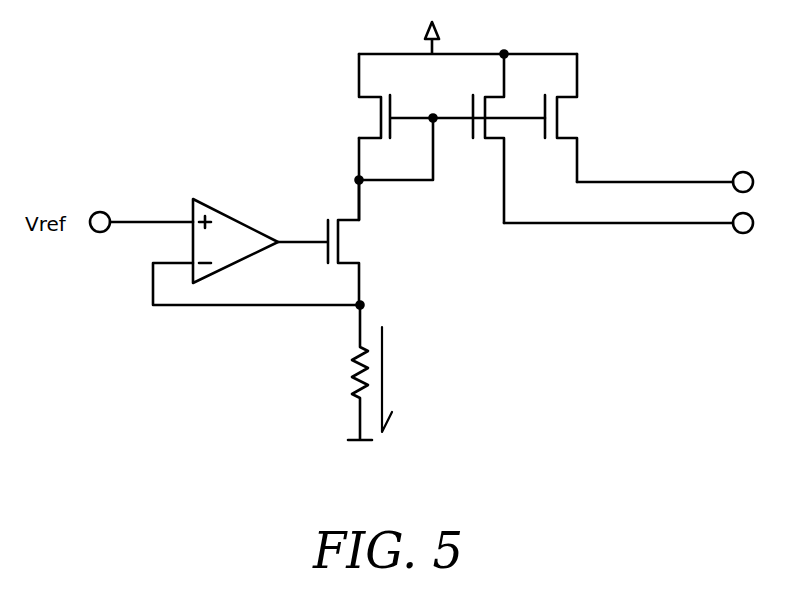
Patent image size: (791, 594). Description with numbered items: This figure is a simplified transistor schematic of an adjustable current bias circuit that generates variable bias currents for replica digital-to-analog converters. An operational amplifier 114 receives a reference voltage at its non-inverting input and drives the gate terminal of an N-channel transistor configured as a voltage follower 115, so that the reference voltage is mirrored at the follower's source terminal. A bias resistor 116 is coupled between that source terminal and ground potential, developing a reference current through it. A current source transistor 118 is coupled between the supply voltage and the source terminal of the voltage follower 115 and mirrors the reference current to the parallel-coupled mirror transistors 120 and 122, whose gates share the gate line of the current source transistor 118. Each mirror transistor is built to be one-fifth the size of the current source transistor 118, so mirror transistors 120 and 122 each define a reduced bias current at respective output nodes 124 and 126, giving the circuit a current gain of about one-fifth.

The operational amplifier 114 is at (233, 237).
The voltage follower 115 is at (357, 240).
The bias resistor 116 is at (353, 381).
The current source transistor 118 is at (362, 120).
The mirror transistor 120 is at (495, 128).
The mirror transistor 122 is at (563, 130).
The output node 124 is at (737, 233).
The output node 126 is at (737, 173).